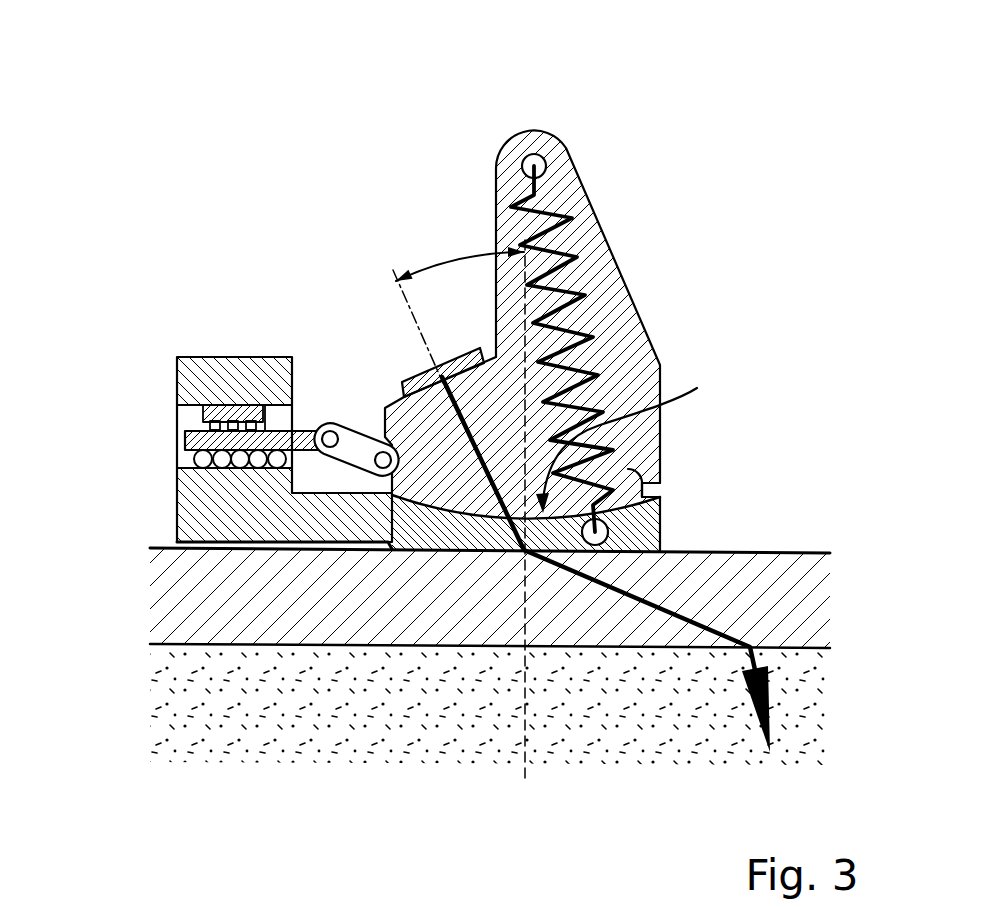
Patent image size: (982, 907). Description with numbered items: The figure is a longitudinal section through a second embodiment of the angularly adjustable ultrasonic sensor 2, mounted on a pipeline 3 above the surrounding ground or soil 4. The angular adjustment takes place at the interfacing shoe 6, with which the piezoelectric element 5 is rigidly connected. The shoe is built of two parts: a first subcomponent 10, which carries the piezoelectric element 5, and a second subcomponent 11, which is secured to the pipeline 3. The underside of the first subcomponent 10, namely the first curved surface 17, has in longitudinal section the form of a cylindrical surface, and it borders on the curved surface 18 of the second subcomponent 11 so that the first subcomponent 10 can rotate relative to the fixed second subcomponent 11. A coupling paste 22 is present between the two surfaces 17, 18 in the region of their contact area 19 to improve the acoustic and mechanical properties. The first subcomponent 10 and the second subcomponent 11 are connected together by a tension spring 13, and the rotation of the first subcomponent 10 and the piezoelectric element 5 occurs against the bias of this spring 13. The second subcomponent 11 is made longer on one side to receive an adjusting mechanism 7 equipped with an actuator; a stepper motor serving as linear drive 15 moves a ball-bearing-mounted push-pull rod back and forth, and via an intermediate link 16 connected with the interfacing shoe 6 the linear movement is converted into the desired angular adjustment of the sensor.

The angularly adjustable ultrasonic sensor 2 is at (652, 114).
The pipeline 3 is at (788, 573).
The subsoil 4 is at (607, 727).
The piezoelectric element 5 is at (415, 383).
The interfacing shoe 6 is at (490, 383).
The adjusting mechanism 7 is at (255, 252).
The first subcomponent 10 is at (522, 142).
The second subcomponent 11 is at (643, 524).
The tension spring 13 is at (567, 243).
The linear drive 15 is at (150, 455).
The intermediate link 16 is at (362, 426).
The first curved surface 17 is at (640, 478).
The curved surface of the second subcomponent 18 is at (443, 510).
The contact area 19 is at (627, 431).
The coupling paste 22 is at (485, 517).